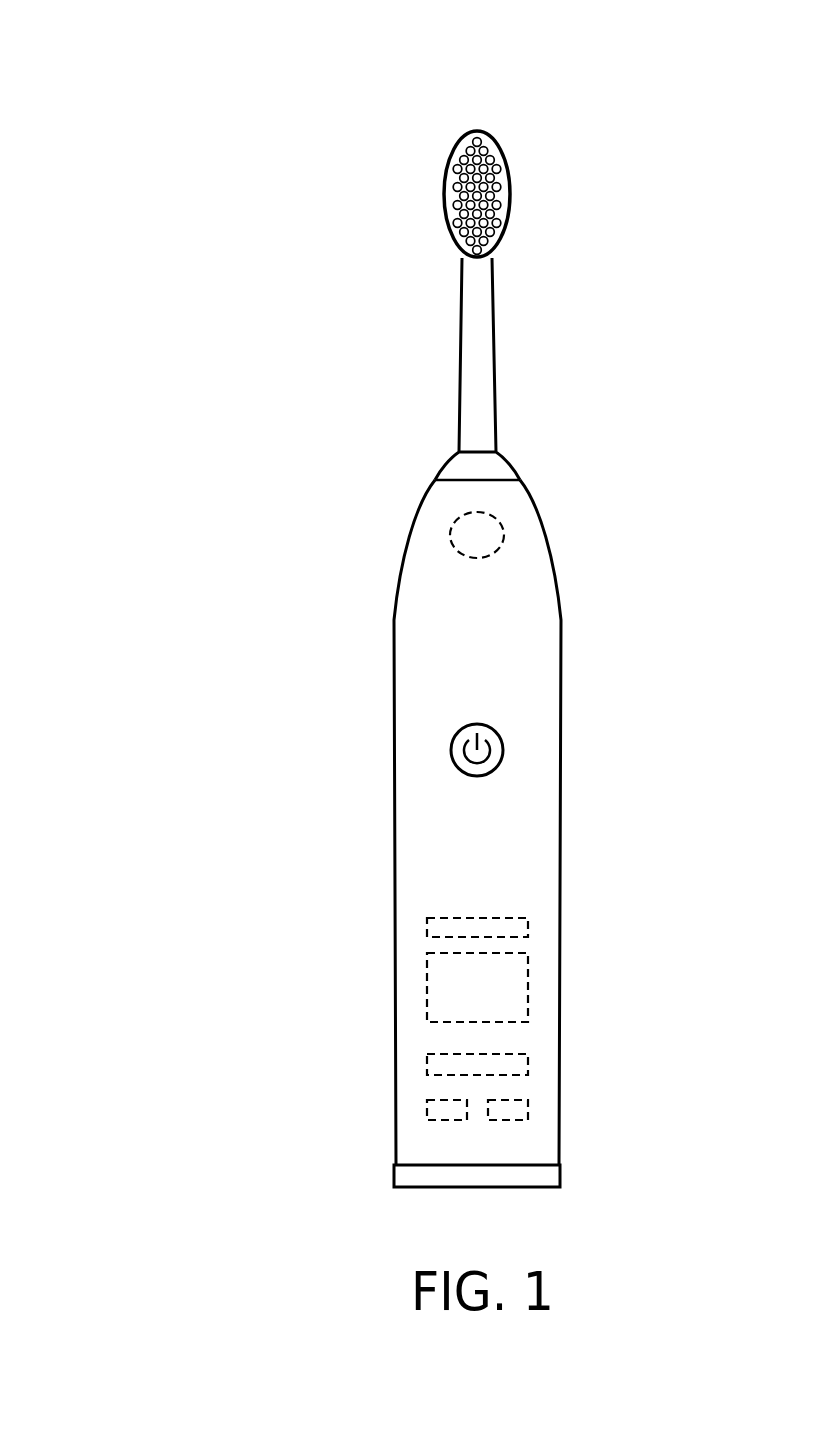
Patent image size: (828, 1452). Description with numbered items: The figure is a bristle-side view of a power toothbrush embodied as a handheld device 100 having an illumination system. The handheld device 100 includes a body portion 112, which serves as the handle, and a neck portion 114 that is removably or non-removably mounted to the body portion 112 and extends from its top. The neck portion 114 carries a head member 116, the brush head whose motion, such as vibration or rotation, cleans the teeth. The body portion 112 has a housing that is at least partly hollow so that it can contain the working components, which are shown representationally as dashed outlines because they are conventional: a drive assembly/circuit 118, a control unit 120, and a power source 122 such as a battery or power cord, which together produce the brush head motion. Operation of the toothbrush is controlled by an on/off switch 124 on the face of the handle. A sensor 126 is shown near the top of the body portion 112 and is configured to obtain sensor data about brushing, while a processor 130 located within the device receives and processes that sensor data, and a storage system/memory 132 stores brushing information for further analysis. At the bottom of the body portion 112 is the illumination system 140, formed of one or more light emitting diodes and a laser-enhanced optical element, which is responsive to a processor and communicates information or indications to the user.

The handheld device 100 is at (168, 98).
The body portion 112 is at (368, 637).
The neck portion 114 is at (453, 341).
The head member 116 is at (443, 190).
The drive assembly/circuit 118 is at (520, 1063).
The control unit 120 is at (425, 1108).
The power source 122 is at (520, 1110).
The on/off switch 124 is at (450, 755).
The sensor 126 is at (502, 529).
The processor 130 is at (425, 978).
The storage system/memory 132 is at (520, 928).
The illumination system 140 is at (560, 1182).